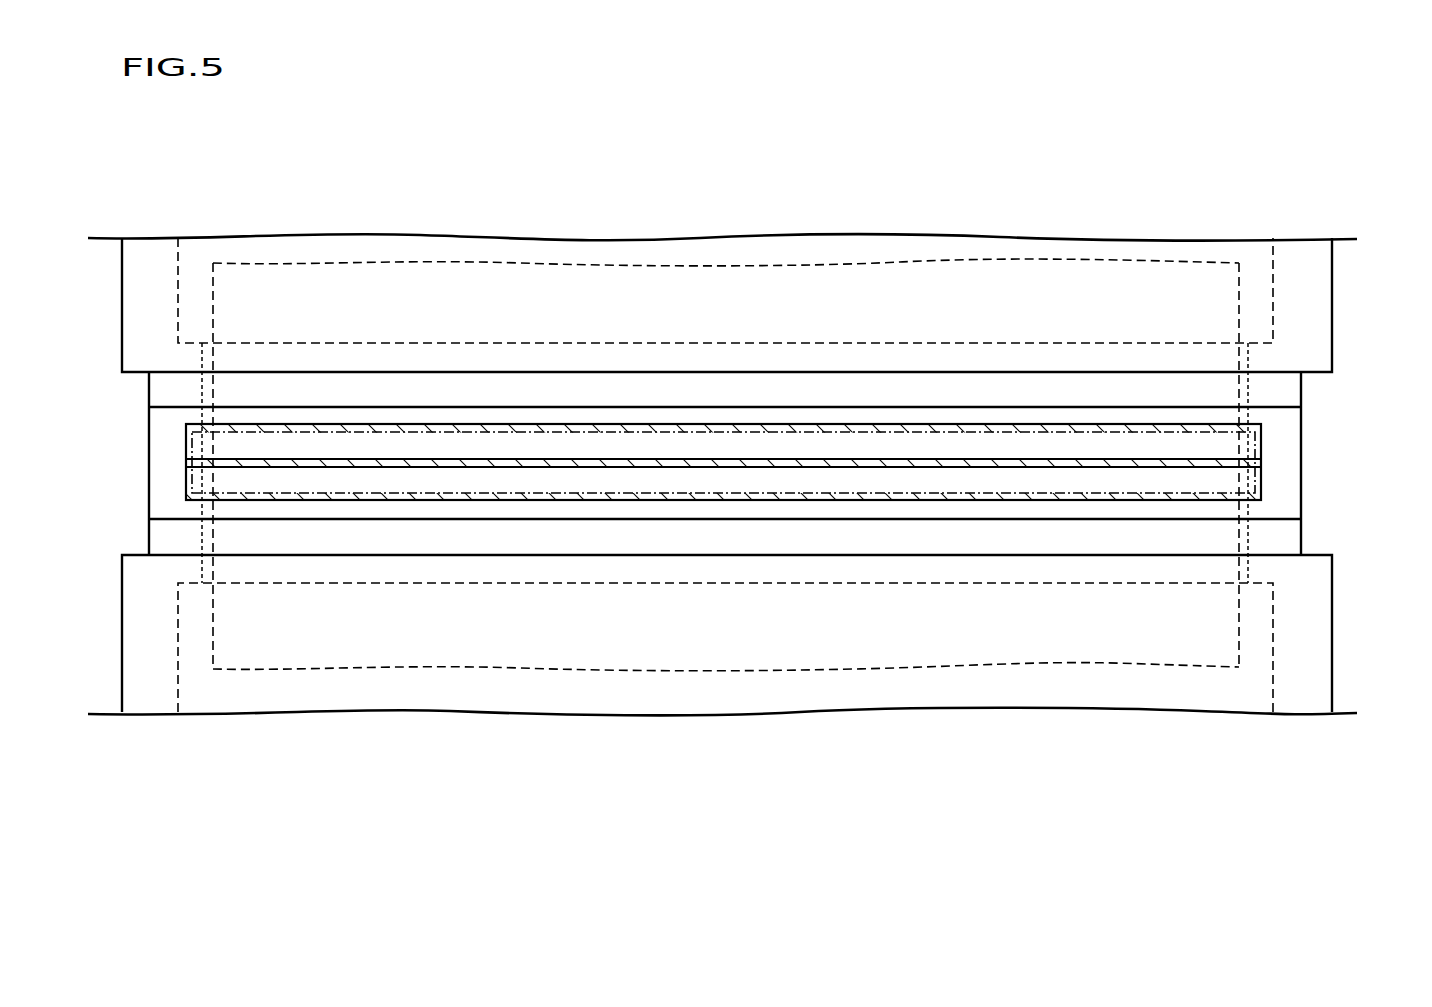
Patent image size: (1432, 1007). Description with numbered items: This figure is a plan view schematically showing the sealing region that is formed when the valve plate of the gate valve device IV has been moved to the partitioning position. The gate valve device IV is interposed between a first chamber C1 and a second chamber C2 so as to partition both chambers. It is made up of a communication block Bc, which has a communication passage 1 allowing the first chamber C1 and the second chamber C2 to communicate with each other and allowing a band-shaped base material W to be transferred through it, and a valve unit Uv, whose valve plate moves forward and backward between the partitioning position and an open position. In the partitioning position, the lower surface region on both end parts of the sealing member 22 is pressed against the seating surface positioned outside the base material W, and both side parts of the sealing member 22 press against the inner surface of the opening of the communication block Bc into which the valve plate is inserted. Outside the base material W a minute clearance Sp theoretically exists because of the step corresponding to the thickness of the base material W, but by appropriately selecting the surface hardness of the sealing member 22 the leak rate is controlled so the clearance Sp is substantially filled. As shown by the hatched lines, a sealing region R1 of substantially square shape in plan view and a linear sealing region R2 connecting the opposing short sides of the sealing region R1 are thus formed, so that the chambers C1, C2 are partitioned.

The first chamber C1 is at (1273, 282).
The second chamber C2 is at (1273, 627).
The communication passage 1 is at (200, 535).
The minute clearance Sp is at (203, 510).
The sealing region R1 is at (1258, 441).
The sealing region R2 is at (1230, 462).
The sealing member 22 is at (870, 492).
The band-shaped base material W is at (1177, 666).
The valve unit Uv is at (590, 484).
The communication block Bc is at (664, 532).
The gate valve device IV is at (690, 814).